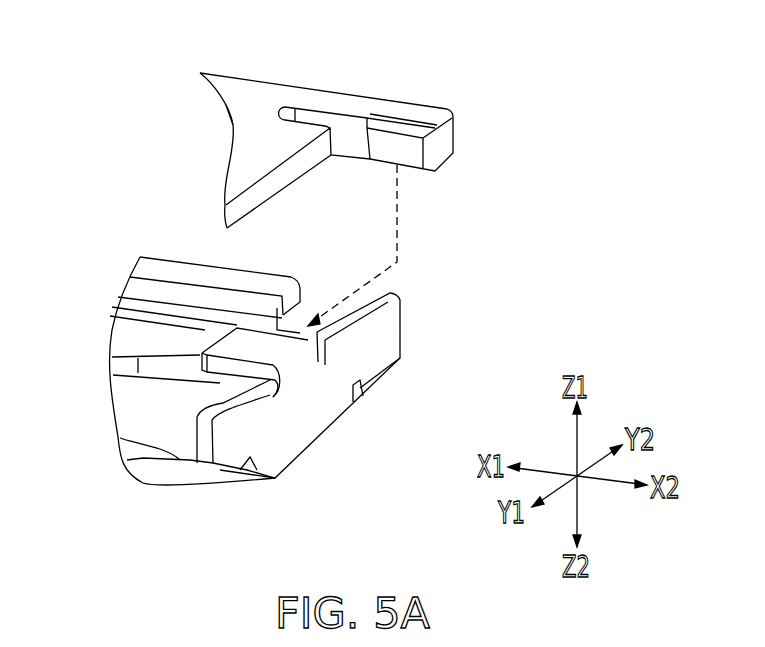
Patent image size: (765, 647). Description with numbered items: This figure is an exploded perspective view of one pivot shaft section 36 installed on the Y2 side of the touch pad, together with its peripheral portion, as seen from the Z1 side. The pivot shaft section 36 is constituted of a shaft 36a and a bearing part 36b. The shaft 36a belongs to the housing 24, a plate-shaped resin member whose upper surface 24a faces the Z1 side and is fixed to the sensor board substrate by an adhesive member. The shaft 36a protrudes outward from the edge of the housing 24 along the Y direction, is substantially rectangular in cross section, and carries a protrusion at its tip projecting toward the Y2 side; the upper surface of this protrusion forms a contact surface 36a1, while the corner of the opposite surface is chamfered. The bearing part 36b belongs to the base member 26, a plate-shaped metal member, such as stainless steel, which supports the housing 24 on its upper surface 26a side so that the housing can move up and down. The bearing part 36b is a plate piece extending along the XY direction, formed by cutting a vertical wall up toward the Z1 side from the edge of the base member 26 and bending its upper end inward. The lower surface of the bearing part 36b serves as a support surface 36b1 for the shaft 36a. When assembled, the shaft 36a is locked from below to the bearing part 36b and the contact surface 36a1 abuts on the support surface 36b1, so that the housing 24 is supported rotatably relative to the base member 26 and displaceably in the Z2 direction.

The pivot shaft section 36 is at (90, 102).
The housing 24 is at (252, 96).
The upper surface 24a is at (250, 148).
The shaft 36a is at (440, 151).
The contact surface 36a1 is at (403, 128).
The base member 26 is at (297, 452).
The upper surface 26a is at (128, 336).
The bearing part 36b is at (270, 342).
The support surface 36b1 is at (228, 364).